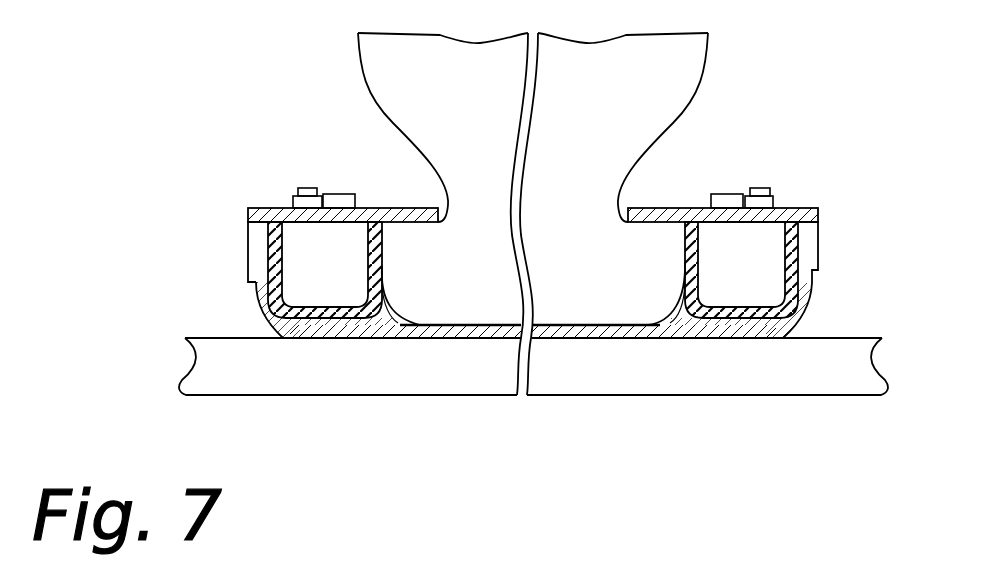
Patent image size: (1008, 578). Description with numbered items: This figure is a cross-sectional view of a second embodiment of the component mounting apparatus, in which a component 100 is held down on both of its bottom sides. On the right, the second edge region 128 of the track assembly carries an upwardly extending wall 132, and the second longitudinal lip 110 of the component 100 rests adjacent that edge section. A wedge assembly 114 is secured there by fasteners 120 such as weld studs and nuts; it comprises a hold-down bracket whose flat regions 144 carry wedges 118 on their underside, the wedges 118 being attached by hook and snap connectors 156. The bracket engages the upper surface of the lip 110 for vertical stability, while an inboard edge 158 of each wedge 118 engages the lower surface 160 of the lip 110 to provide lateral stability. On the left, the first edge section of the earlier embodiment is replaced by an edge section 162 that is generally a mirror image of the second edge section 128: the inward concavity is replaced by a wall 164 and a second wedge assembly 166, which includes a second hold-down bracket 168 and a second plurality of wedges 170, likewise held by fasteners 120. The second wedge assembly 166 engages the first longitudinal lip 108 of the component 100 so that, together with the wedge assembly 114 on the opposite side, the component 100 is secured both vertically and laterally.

The component 100 is at (372, 60).
The first longitudinal lip 108 is at (396, 292).
The second longitudinal lip 110 is at (681, 296).
The wedge assembly 114 is at (675, 208).
The wedges 118 is at (799, 241).
The fasteners 120 is at (307, 188).
The second edge region 128 is at (824, 332).
The upwardly extending wall 132 is at (808, 304).
The flat regions of hold-down bracket 144 is at (794, 207).
The snap connector 156 is at (728, 192).
The inboard edge of wedge 158 is at (699, 257).
The lower surface of lip 160 is at (669, 236).
The edge section 162 is at (238, 325).
The wall 164 is at (260, 306).
The second wedge assembly 166 is at (397, 188).
The second hold-down bracket 168 is at (277, 207).
The second plurality of wedges 170 is at (262, 231).